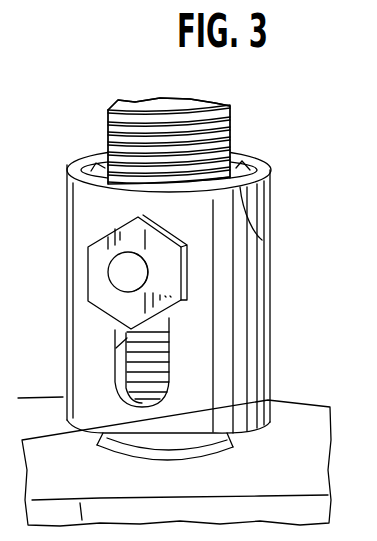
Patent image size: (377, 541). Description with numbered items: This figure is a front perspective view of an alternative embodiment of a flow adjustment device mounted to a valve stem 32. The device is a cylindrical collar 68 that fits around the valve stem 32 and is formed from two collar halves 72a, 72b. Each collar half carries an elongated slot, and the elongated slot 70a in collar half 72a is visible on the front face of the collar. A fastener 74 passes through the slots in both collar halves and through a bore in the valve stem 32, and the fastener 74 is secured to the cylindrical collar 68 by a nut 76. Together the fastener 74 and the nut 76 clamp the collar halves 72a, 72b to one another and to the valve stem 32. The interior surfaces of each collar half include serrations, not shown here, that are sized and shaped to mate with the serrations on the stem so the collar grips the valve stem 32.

The valve stem 32 is at (110, 140).
The cylindrical collar 68 is at (273, 213).
The elongated slot 70a is at (117, 332).
The collar half 72a is at (262, 240).
The collar half 72b is at (247, 162).
The fastener 74 is at (133, 253).
The nut 76 is at (187, 272).